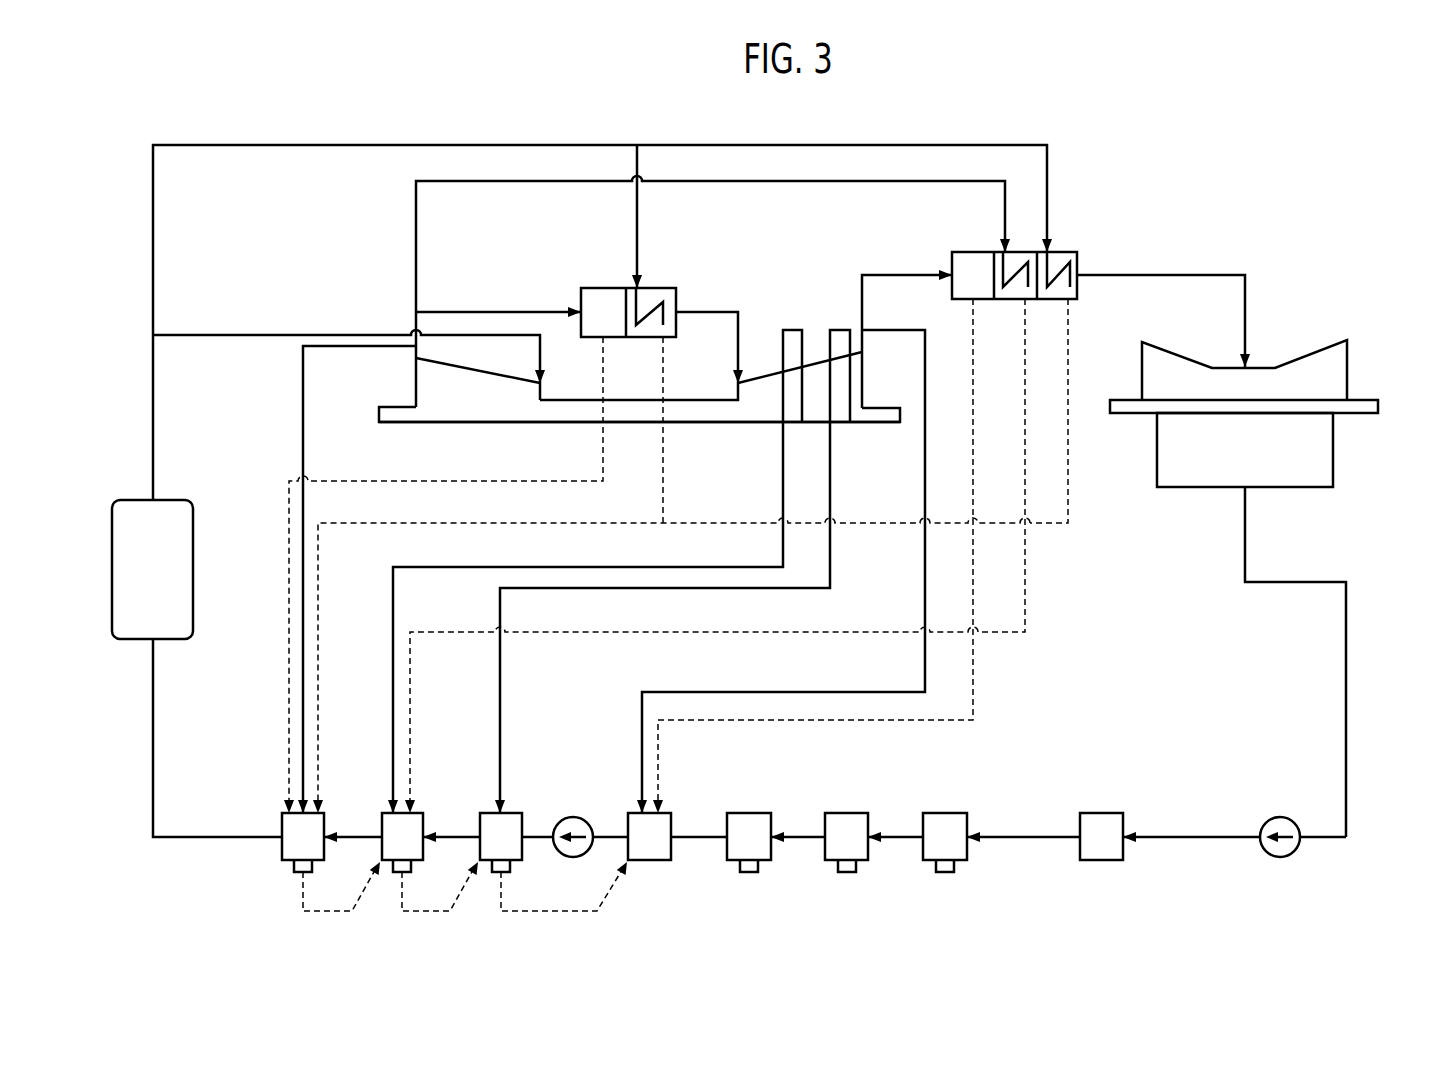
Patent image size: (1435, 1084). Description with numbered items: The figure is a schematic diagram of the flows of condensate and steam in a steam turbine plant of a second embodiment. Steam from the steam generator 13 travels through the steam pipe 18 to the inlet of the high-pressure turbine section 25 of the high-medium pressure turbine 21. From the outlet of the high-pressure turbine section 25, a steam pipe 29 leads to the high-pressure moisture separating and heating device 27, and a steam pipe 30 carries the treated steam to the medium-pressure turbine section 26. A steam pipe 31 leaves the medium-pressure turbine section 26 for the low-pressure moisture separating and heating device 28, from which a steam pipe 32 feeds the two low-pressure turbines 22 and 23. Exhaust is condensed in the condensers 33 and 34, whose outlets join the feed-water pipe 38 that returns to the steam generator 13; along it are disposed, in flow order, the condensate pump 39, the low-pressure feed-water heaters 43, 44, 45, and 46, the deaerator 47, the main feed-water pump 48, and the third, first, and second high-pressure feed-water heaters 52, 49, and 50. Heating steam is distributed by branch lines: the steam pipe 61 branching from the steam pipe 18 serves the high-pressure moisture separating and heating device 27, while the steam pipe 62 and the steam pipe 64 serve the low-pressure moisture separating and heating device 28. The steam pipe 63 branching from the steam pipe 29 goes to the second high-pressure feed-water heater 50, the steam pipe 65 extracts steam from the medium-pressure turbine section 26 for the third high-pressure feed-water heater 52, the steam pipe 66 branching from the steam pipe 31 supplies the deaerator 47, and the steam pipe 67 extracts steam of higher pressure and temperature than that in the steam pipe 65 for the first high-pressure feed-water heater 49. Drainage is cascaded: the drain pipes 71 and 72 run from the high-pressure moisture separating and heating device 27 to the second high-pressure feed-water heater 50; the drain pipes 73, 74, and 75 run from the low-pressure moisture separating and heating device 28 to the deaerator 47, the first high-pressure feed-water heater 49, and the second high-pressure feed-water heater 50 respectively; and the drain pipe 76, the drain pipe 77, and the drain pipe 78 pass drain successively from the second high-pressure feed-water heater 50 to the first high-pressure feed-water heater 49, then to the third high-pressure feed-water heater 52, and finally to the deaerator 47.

The steam generator 13 is at (140, 496).
The steam pipe 18 is at (335, 335).
The high-medium pressure turbine 21 is at (645, 437).
The low-pressure turbine 22 is at (1345, 328).
The low-pressure turbine 23 is at (1257, 336).
The high-pressure turbine section 25 is at (463, 405).
The medium-pressure turbine section 26 is at (808, 405).
The high-pressure moisture separating and heating device 27 is at (663, 288).
The low-pressure moisture separating and heating device 28 is at (1022, 252).
The steam pipe 29 is at (468, 312).
The steam pipe 30 is at (719, 312).
The steam pipe 31 is at (900, 275).
The steam pipe 32 is at (1178, 275).
The condenser 33 is at (1333, 450).
The condenser 34 is at (1291, 450).
The feed-water pipe 38 is at (1346, 688).
The condensate pump 39 is at (1280, 817).
The low-pressure feed-water heater 43 is at (1101, 813).
The low-pressure feed-water heater 44 is at (944, 813).
The low-pressure feed-water heater 45 is at (846, 813).
The low-pressure feed-water heater 46 is at (749, 813).
The deaerator 47 is at (655, 860).
The main feed-water pump 48 is at (573, 817).
The first high-pressure feed-water heater 49 is at (425, 826).
The second high-pressure feed-water heater 50 is at (282, 826).
The third high-pressure feed-water heater 52 is at (522, 826).
The steam pipe 61 is at (637, 145).
The steam pipe 62 is at (1047, 152).
The steam pipe 63 is at (303, 437).
The steam pipe 64 is at (416, 215).
The steam pipe 65 is at (667, 590).
The steam pipe 66 is at (925, 663).
The steam pipe 67 is at (783, 475).
The drain pipe 71 is at (289, 622).
The drain pipe 72 is at (318, 622).
The drain pipe 73 is at (973, 707).
The drain pipe 74 is at (1025, 597).
The drain pipe 75 is at (1068, 500).
The drain pipe 76 is at (323, 911).
The drain pipe 77 is at (420, 911).
The drain pipe 78 is at (550, 911).